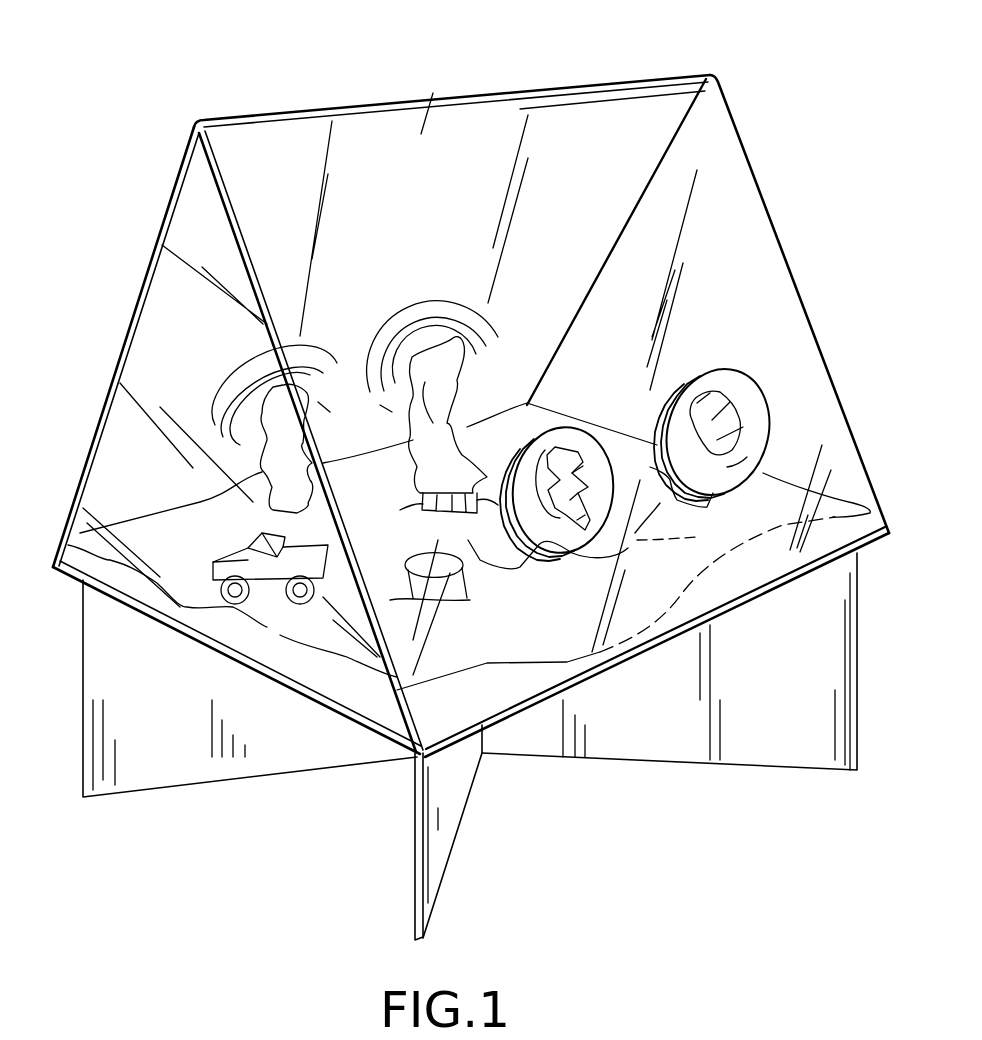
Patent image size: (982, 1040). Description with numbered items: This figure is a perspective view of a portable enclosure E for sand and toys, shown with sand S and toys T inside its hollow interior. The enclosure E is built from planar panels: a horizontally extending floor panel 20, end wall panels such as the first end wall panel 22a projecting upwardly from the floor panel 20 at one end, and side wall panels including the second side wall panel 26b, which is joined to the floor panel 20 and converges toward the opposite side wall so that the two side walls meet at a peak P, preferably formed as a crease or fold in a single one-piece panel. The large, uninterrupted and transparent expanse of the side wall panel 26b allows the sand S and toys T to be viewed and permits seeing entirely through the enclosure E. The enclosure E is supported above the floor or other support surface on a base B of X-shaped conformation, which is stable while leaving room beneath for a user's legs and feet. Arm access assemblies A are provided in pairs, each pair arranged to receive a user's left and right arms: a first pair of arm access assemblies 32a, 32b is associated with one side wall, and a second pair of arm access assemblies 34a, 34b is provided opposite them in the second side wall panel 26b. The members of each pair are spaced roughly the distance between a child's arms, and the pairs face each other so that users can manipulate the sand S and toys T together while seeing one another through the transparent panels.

The floor panel 20 is at (471, 472).
The peak P is at (471, 381).
The portable enclosure E is at (120, 313).
The first end wall panel 22a is at (197, 333).
The second side wall panel 26b is at (747, 223).
The base B is at (137, 800).
The sand S is at (200, 503).
The arm access assembly 32a is at (337, 360).
The arm access assembly 32b is at (443, 308).
The arm access assembly 34a is at (583, 547).
The arm access assembly 34b is at (698, 368).
The toys T is at (207, 553).
The arm access assemblies A is at (323, 405).